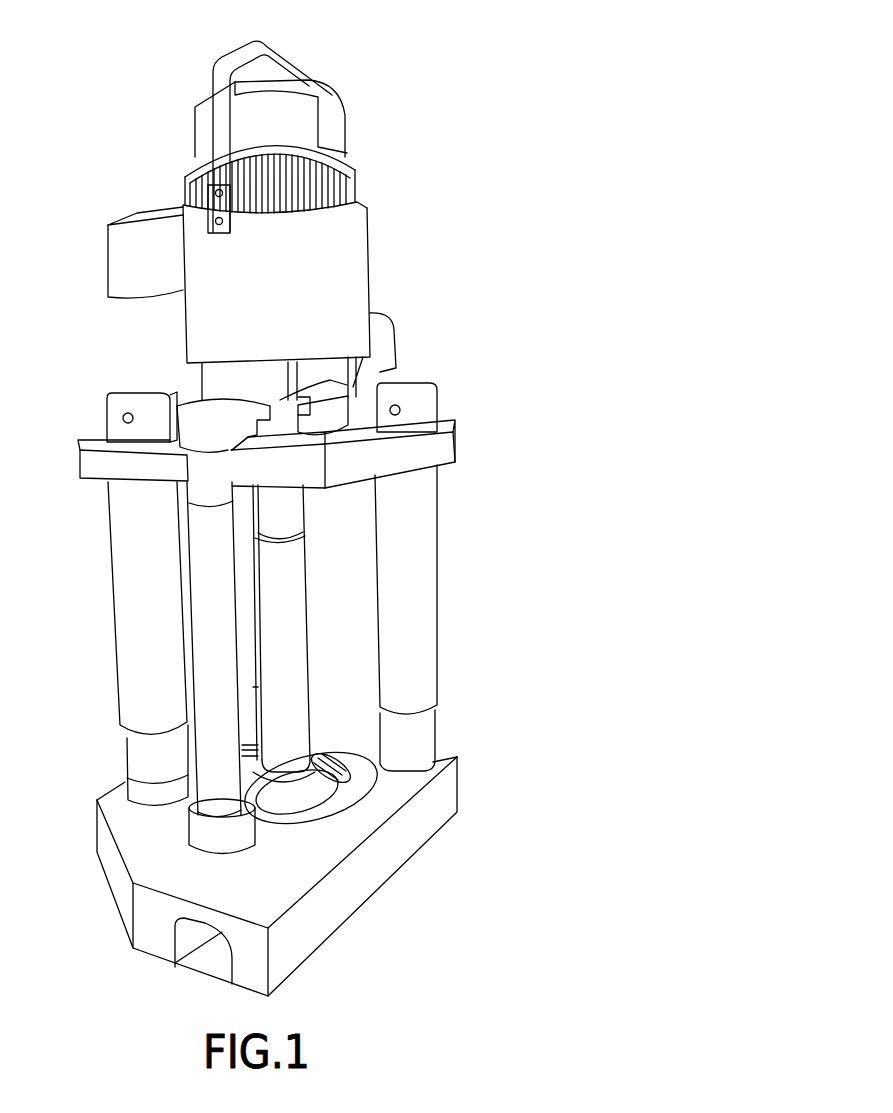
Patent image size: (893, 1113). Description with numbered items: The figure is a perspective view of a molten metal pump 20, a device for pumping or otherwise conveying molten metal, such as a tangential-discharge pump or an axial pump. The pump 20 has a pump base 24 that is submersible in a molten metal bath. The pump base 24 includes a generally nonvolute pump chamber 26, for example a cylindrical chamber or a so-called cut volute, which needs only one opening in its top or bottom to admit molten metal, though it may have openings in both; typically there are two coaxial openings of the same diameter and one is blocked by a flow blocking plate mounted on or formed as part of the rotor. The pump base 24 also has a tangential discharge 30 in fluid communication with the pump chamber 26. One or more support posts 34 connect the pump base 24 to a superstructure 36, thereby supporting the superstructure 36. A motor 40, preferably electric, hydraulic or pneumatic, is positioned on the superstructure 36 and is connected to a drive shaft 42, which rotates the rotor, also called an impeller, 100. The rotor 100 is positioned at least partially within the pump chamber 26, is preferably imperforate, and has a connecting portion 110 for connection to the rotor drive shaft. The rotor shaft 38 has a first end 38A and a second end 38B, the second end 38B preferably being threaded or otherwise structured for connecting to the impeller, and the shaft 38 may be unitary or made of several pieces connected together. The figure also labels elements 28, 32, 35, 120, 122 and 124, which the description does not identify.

The molten metal pump 20 is at (490, 84).
The pump base 24 is at (453, 787).
The pump chamber 26 is at (341, 742).
The ring 28 is at (340, 733).
The tangential discharge 30 is at (208, 967).
The notch 32 is at (175, 940).
The support posts 34 is at (109, 545).
The brackets 35 is at (107, 410).
The superstructure 36 is at (447, 450).
The rotor shaft 38 is at (310, 633).
The first end 38A is at (308, 492).
The second end 38B is at (312, 770).
The motor 40 is at (345, 263).
The drive shaft 42 is at (326, 548).
The rotor 100 is at (340, 768).
The connecting portion 110 is at (118, 800).
The drive rod 120 is at (181, 620).
The rod housing 122 is at (200, 402).
The rod collar 124 is at (252, 818).